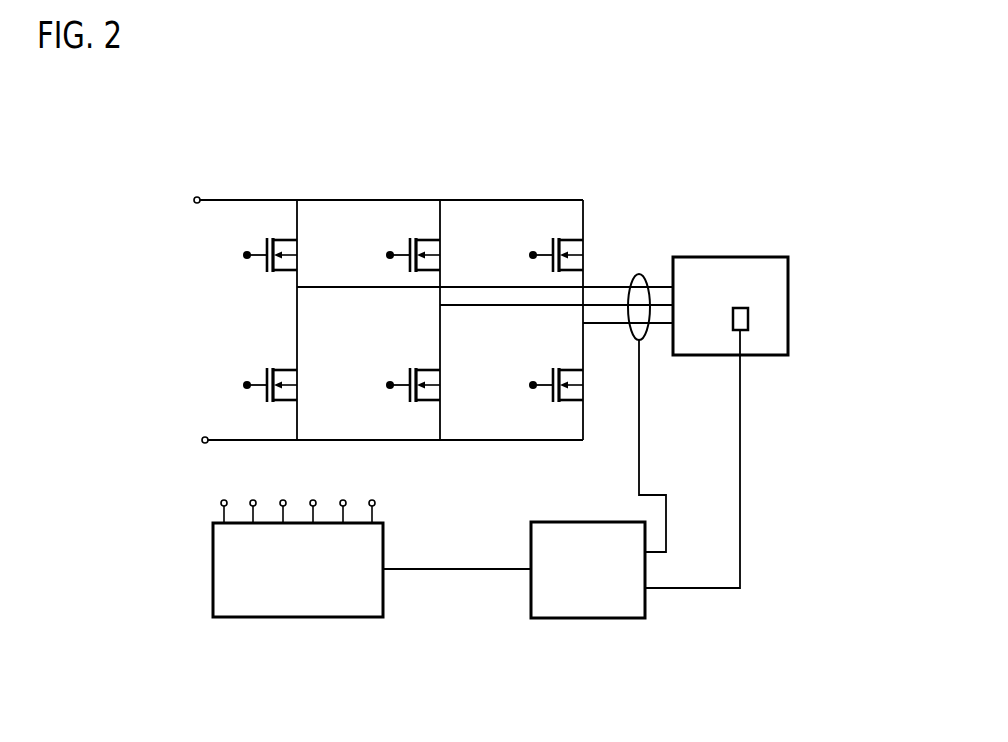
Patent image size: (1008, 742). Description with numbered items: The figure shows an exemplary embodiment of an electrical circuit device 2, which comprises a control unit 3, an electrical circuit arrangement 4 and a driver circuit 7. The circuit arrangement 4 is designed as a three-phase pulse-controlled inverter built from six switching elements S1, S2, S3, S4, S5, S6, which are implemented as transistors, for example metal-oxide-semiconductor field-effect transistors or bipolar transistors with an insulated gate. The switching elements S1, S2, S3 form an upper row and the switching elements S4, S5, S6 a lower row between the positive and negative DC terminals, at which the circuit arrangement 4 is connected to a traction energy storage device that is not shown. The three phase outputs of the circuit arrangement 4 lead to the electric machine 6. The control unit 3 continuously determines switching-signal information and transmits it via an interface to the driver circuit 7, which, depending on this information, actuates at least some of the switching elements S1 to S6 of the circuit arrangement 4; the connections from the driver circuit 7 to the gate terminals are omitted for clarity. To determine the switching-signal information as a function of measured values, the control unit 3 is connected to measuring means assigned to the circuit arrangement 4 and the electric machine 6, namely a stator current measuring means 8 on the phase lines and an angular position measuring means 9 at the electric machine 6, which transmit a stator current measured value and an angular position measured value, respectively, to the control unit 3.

The electrical circuit device 2 is at (590, 153).
The control unit 3 is at (625, 619).
The electrical circuit arrangement 4 is at (398, 265).
The electric machine 6 is at (790, 260).
The driver circuit 7 is at (353, 618).
The stator current measuring means 8 is at (643, 276).
The angular position measuring means 9 is at (745, 307).
The switching element S1 is at (255, 265).
The switching element S2 is at (401, 265).
The switching element S3 is at (543, 265).
The switching element S4 is at (255, 394).
The switching element S5 is at (401, 394).
The switching element S6 is at (543, 394).